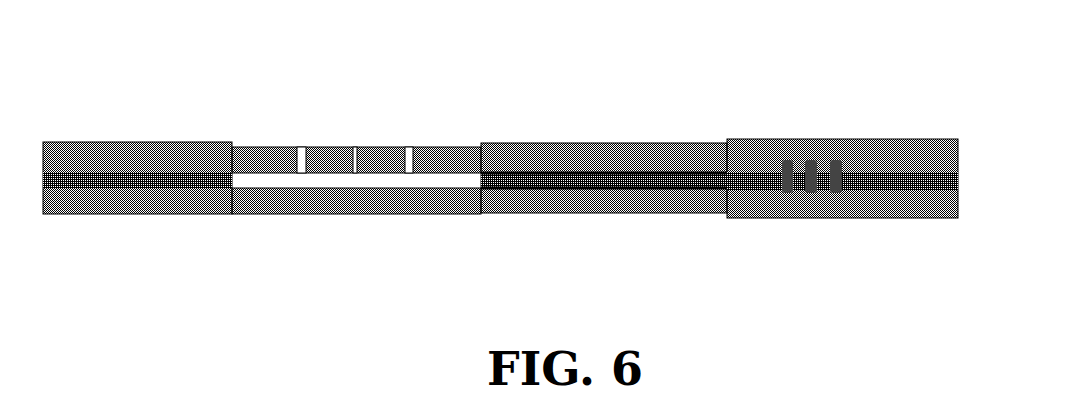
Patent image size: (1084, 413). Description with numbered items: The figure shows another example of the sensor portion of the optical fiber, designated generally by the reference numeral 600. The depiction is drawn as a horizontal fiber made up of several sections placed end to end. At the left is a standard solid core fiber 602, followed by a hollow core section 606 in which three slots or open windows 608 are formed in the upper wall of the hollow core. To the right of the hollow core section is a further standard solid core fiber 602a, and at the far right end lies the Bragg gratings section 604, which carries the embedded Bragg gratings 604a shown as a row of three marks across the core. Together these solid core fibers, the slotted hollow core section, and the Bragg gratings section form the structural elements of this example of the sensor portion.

The sensor portion depiction 600 is at (680, 66).
The standard solid core fiber 602 is at (98, 180).
The standard solid core fiber 602a is at (577, 200).
The Bragg gratings section 604 is at (898, 212).
The embedded Bragg gratings 604a is at (813, 183).
The hollow core section 606 is at (327, 210).
The slots or open windows 608 is at (413, 142).